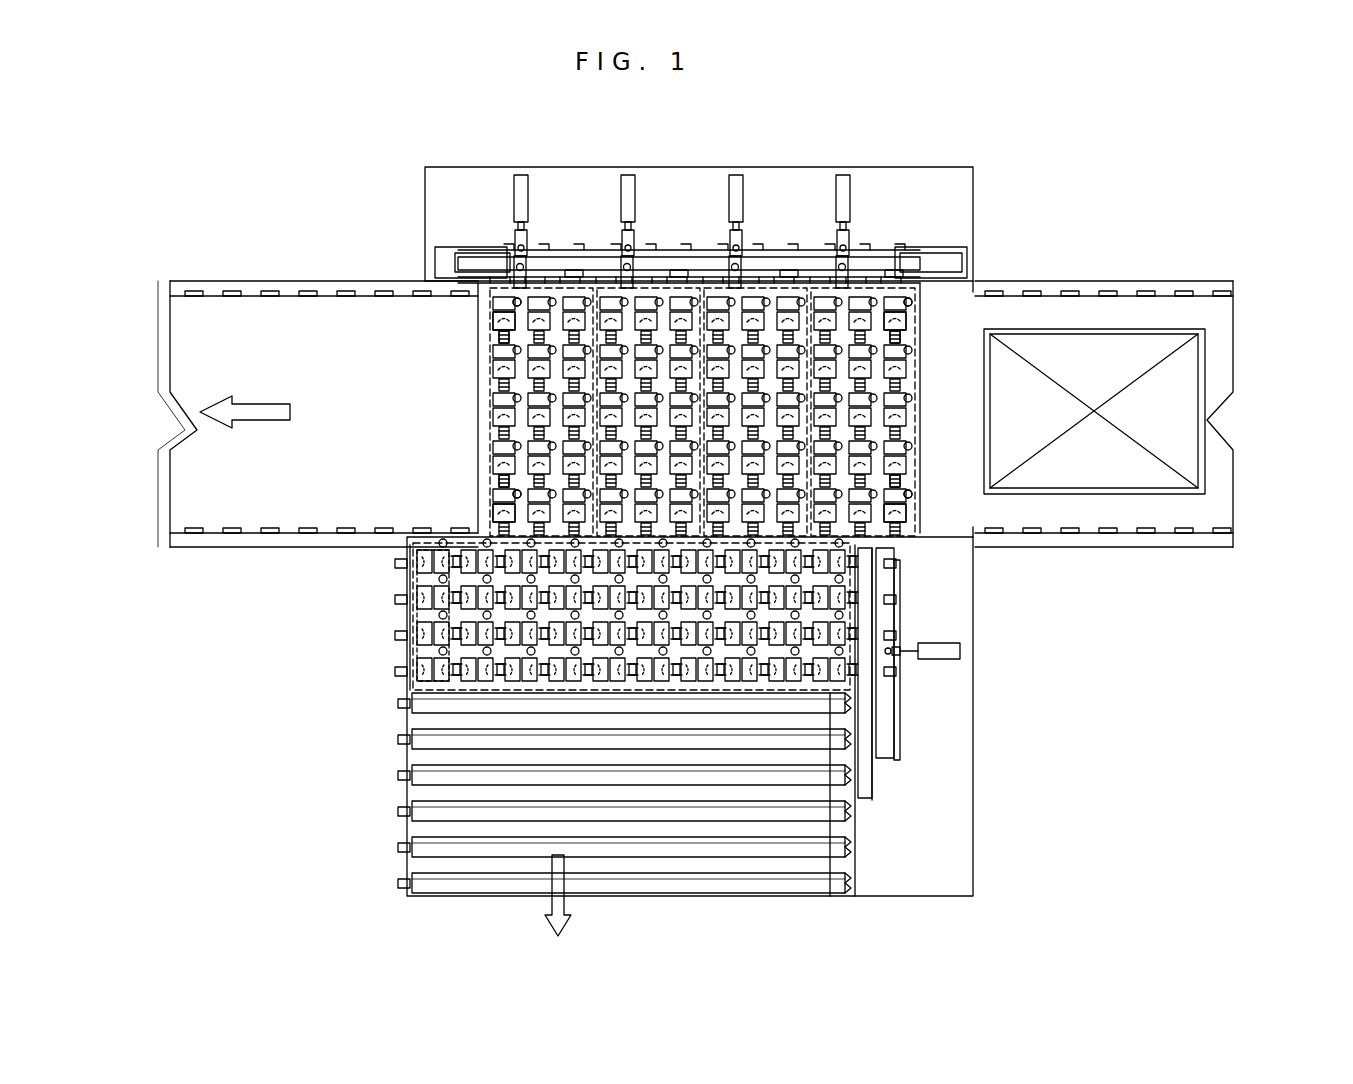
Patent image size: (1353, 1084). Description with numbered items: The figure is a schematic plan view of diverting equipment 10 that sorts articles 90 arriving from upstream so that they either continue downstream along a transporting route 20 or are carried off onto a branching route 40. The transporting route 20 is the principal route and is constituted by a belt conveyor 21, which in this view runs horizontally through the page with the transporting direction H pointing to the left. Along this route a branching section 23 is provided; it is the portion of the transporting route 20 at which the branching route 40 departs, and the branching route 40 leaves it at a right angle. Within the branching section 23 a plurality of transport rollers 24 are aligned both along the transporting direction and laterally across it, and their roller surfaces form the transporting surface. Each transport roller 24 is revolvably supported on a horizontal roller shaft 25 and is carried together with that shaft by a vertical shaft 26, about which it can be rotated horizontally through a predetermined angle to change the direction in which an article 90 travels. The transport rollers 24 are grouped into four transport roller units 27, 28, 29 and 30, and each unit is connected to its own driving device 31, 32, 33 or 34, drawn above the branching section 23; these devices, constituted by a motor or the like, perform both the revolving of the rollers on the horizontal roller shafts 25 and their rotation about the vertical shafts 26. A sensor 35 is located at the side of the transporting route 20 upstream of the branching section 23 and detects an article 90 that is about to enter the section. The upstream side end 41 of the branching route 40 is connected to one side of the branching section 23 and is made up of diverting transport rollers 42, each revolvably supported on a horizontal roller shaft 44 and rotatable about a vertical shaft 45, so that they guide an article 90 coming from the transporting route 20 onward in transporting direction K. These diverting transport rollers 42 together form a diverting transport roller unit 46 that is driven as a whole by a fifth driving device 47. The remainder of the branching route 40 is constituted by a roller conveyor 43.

The diverting equipment 10 is at (218, 185).
The transporting route 20 is at (216, 552).
The belt conveyor 21 is at (188, 350).
The branching section 23 is at (773, 380).
The transport roller 24 is at (505, 302).
The horizontal roller shaft 25 is at (500, 336).
The vertical shaft 26 is at (500, 320).
The transport roller unit 27 is at (892, 274).
The transport roller unit 28 is at (785, 274).
The transport roller unit 29 is at (675, 274).
The transport roller unit 30 is at (572, 274).
The driving device 31 is at (843, 175).
The driving device 32 is at (736, 175).
The driving device 33 is at (628, 175).
The driving device 34 is at (521, 175).
The sensor 35 is at (995, 268).
The branching route 40 is at (866, 826).
The upstream side end 41 is at (470, 658).
The diverting transport roller 42 is at (410, 571).
The roller conveyor 43 is at (765, 888).
The horizontal roller shaft 44 is at (400, 564).
The vertical shaft 45 is at (420, 572).
The diverting transport roller unit 46 is at (505, 690).
The fifth driving device 47 is at (962, 656).
The article 90 is at (1095, 330).